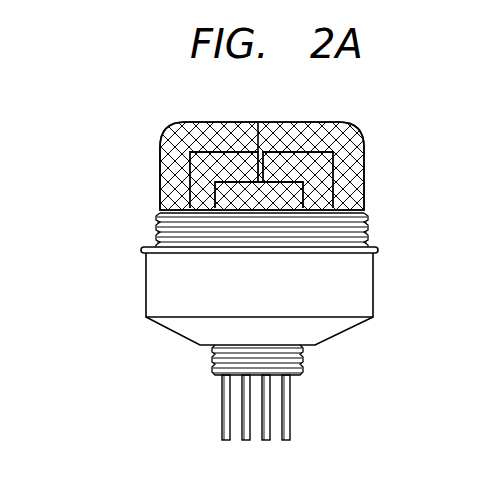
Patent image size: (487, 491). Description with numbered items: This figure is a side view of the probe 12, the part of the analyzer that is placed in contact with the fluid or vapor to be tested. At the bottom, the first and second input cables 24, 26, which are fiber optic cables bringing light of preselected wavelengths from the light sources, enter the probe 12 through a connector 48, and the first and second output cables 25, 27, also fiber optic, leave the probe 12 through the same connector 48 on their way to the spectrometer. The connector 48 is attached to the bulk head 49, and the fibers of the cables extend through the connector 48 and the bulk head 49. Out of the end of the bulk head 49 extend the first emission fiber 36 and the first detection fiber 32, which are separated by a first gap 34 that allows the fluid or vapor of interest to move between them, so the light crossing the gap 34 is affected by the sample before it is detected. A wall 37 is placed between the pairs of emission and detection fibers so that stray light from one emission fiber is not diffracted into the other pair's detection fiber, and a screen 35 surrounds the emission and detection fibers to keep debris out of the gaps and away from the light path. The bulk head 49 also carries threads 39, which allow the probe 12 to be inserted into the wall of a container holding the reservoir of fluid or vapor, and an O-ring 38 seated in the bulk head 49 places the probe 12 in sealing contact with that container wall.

The probe 12 is at (145, 82).
The first input cable 24 is at (287, 395).
The first output cable 25 is at (267, 417).
The second input cable 26 is at (226, 395).
The second output cable 27 is at (246, 417).
The first detection fiber 32 is at (334, 172).
The first gap 34 is at (255, 121).
The screen 35 is at (330, 124).
The first emission fiber 36 is at (190, 171).
The wall 37 is at (360, 140).
The O-ring 38 is at (376, 250).
The threads 39 is at (366, 223).
The connector 48 is at (302, 362).
The bulk head 49 is at (363, 290).